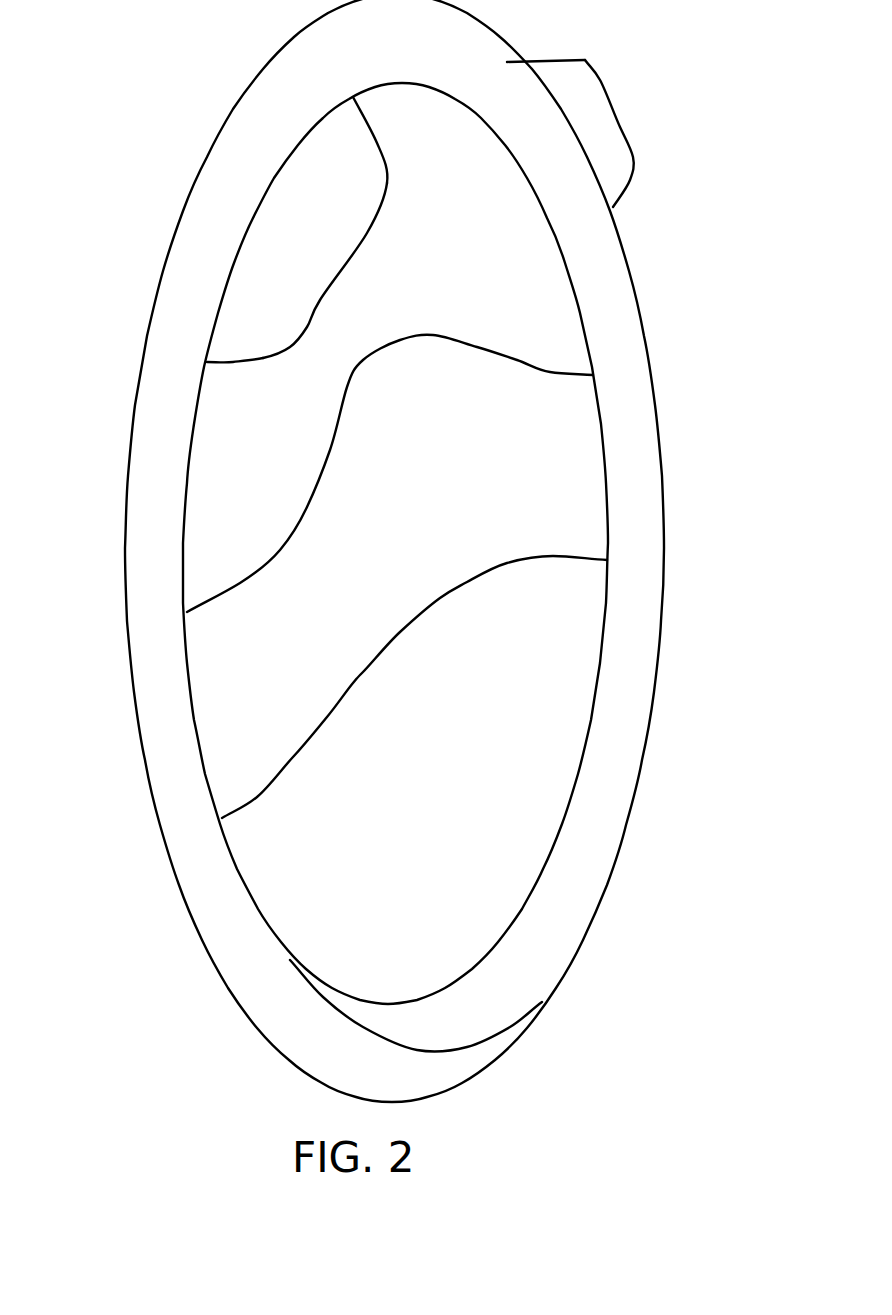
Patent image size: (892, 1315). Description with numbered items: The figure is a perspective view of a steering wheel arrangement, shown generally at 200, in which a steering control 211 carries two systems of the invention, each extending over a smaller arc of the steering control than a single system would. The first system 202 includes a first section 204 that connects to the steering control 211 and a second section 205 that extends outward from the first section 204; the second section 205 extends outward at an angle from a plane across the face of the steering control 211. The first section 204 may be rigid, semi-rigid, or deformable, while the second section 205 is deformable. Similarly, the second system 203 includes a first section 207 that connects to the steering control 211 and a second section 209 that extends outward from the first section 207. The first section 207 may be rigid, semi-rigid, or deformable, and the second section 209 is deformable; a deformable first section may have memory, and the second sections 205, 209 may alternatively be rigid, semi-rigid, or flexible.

The steering wheel with multiple systems 200 is at (78, 74).
The first system 202 is at (356, 279).
The second system 203 is at (638, 103).
The first section 204 is at (205, 362).
The second section 205 is at (377, 184).
The first section 207 is at (508, 62).
The second section 209 is at (626, 170).
The steering control 211 is at (176, 844).